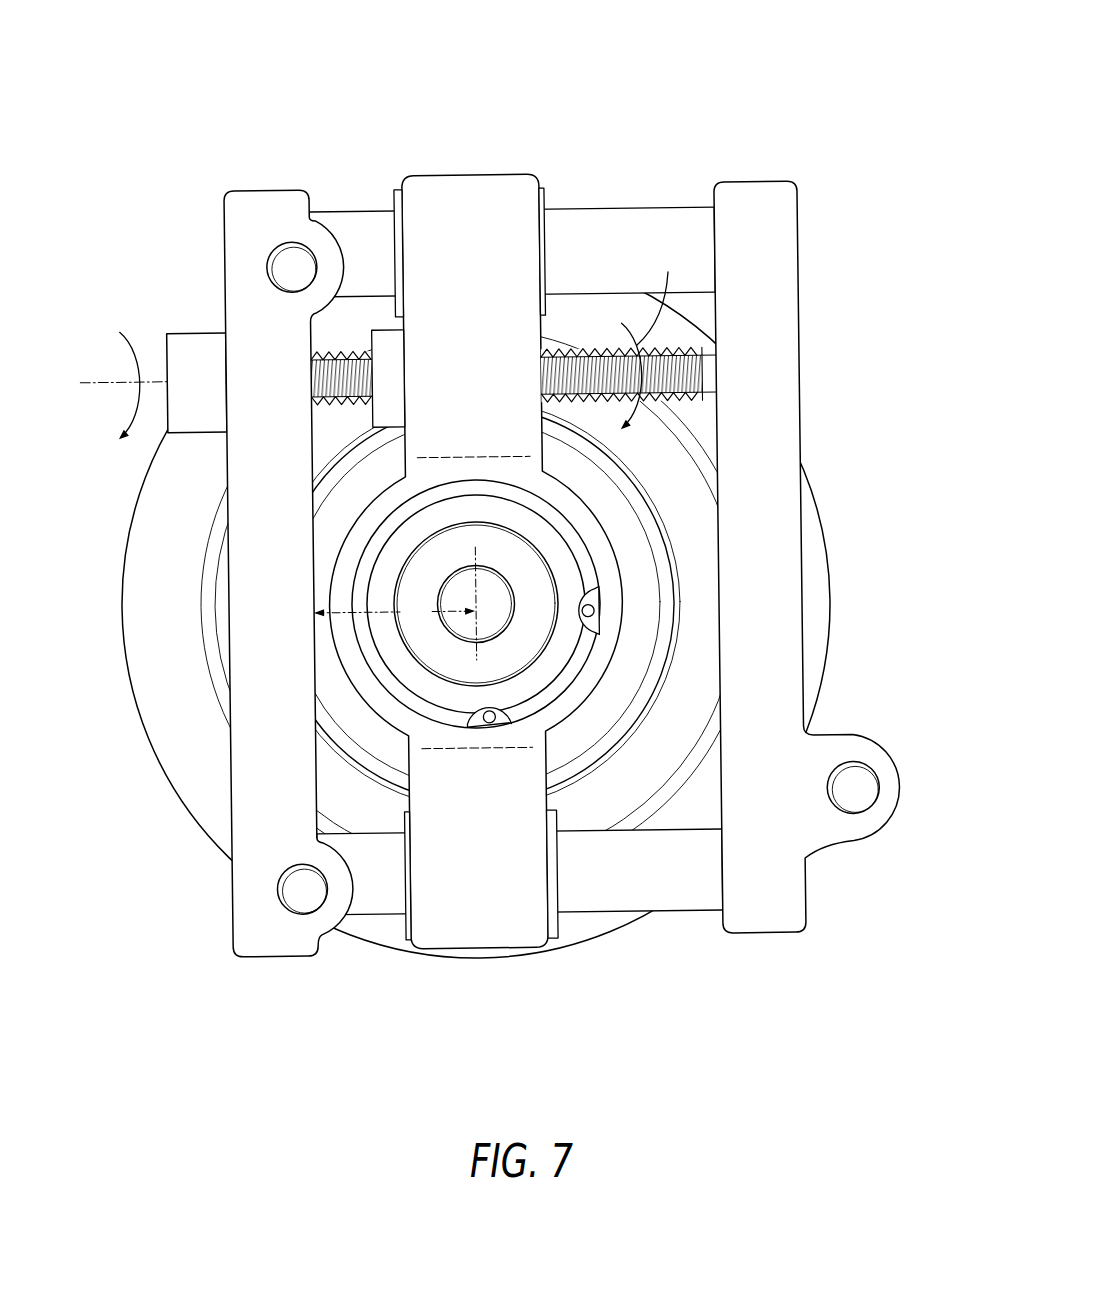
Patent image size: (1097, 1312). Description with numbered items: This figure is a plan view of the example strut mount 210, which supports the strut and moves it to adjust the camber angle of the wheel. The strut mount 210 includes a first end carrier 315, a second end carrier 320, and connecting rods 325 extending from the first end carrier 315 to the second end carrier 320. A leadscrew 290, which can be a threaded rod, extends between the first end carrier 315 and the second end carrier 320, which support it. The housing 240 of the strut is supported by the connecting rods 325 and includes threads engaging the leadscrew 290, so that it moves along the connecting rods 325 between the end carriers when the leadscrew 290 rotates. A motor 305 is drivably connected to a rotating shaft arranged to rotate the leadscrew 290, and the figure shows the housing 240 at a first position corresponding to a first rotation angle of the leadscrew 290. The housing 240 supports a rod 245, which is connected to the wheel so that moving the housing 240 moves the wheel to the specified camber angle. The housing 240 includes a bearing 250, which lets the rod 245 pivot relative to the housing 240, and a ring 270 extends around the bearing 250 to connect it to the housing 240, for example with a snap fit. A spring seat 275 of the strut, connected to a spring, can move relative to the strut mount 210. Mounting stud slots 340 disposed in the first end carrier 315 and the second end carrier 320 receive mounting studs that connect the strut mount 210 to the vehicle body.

The strut mount 210 is at (773, 22).
The housing 240 is at (483, 175).
The rod 245 is at (485, 593).
The bearing 250 is at (538, 662).
The ring 270 is at (592, 625).
The spring seat 275 is at (173, 748).
The leadscrew 290 is at (572, 342).
The motor 305 is at (205, 332).
The first end carrier 315 is at (772, 185).
The second end carrier 320 is at (244, 187).
The connecting rods 325 is at (358, 228).
The mounting stud slots 340 is at (290, 256).